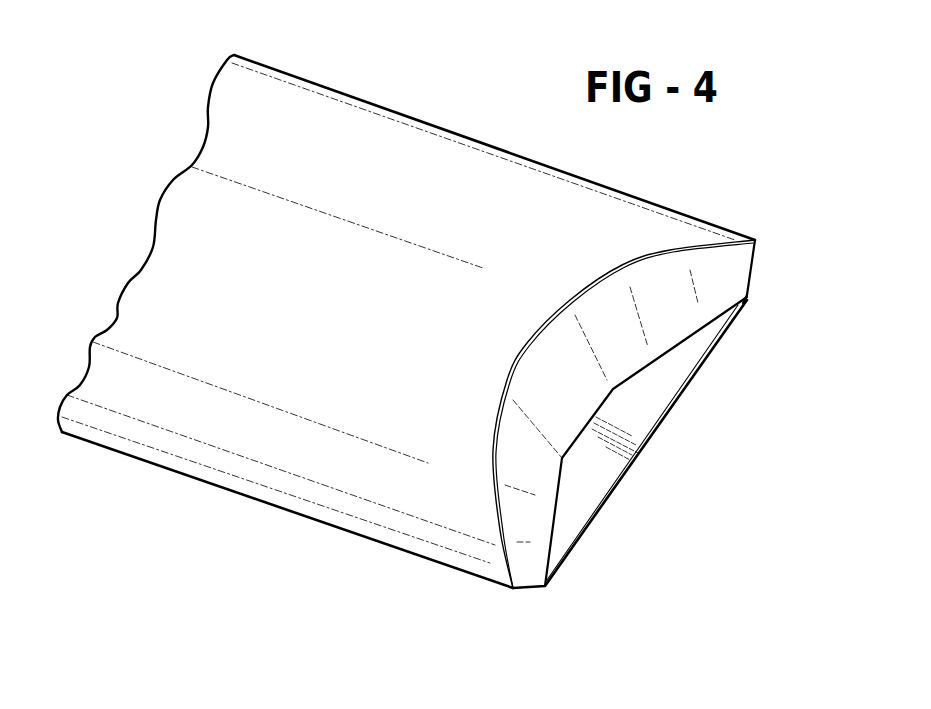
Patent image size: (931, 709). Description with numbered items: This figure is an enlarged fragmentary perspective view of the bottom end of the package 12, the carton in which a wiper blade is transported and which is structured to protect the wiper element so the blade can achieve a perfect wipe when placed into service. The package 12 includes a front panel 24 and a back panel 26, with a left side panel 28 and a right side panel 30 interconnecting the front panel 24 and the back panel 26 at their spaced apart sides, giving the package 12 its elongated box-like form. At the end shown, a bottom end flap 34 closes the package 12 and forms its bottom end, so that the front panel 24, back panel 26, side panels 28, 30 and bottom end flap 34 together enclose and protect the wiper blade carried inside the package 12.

The package 12 is at (720, 196).
The front panel 24 is at (612, 218).
The back panel 26 is at (650, 405).
The left side panel 28 is at (753, 265).
The right side panel 30 is at (527, 590).
The bottom end flap 34 is at (537, 476).